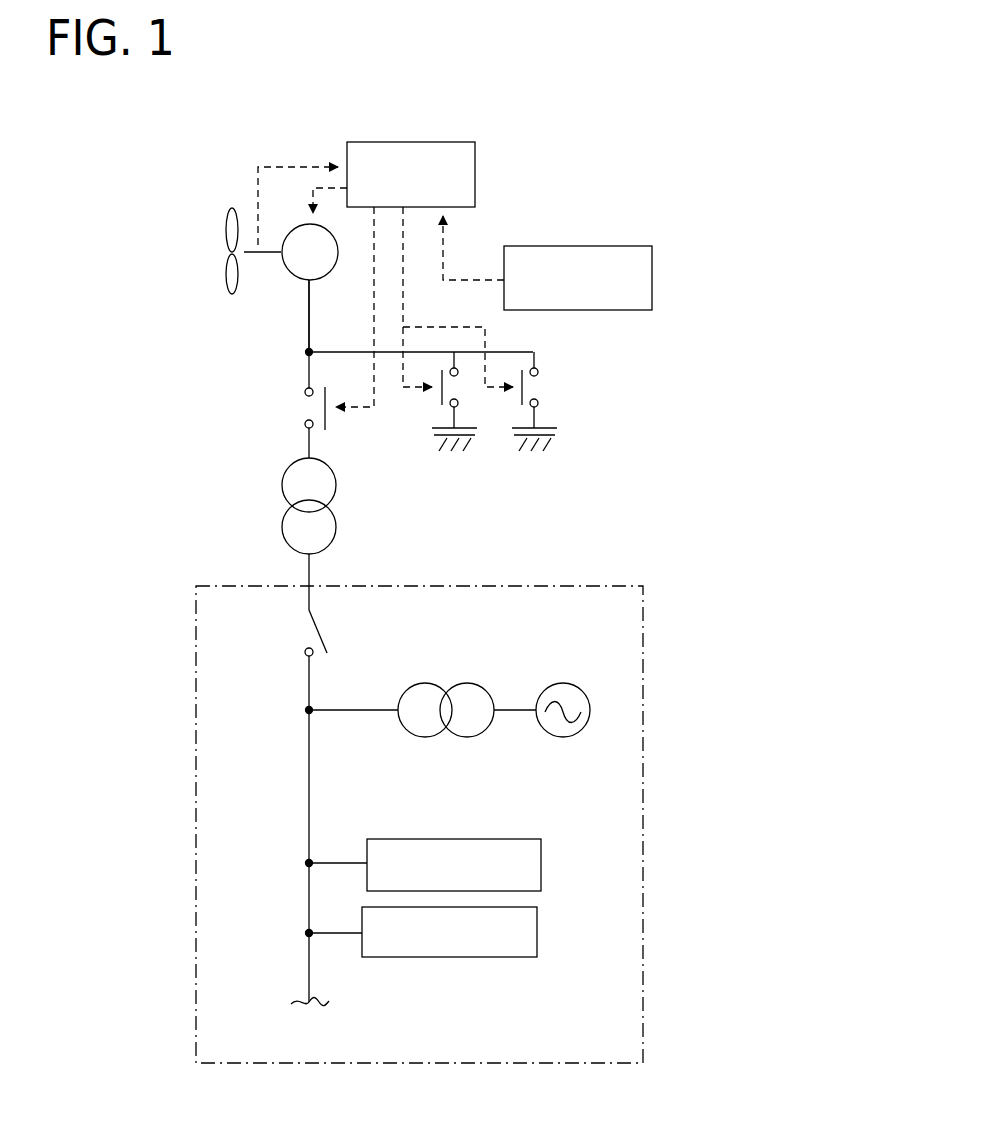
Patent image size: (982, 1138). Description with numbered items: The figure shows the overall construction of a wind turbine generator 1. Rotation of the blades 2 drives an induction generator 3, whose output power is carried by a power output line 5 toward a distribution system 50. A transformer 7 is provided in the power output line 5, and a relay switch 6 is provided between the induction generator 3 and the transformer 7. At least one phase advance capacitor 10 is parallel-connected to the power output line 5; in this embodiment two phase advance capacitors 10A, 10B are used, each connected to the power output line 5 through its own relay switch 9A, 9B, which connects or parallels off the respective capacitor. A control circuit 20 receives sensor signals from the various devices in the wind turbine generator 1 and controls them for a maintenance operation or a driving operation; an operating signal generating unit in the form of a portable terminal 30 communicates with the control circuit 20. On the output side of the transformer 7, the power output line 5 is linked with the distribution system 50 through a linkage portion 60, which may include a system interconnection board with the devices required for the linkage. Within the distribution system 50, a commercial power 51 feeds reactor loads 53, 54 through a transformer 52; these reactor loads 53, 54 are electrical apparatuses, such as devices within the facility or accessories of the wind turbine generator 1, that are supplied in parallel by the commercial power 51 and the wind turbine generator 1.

The wind turbine generator 1 is at (522, 178).
The blades 2 is at (226, 226).
The induction generator 3 is at (300, 222).
The power output line 5 is at (308, 299).
The relay switch 6 is at (305, 411).
The transformer 7 is at (283, 478).
The relay switch 9A is at (440, 404).
The relay switch 9B is at (540, 388).
The phase advance capacitor 10 is at (597, 492).
The phase advance capacitor 10A is at (476, 433).
The phase advance capacitor 10B is at (555, 433).
The control circuit 20 is at (430, 142).
The portable terminal 30 is at (601, 246).
The distribution system 50 is at (643, 660).
The commercial power 51 is at (567, 684).
The transformer 52 is at (470, 683).
The reactor loads 53 is at (545, 862).
The reactor loads 54 is at (541, 930).
The linkage portion 60 is at (306, 710).